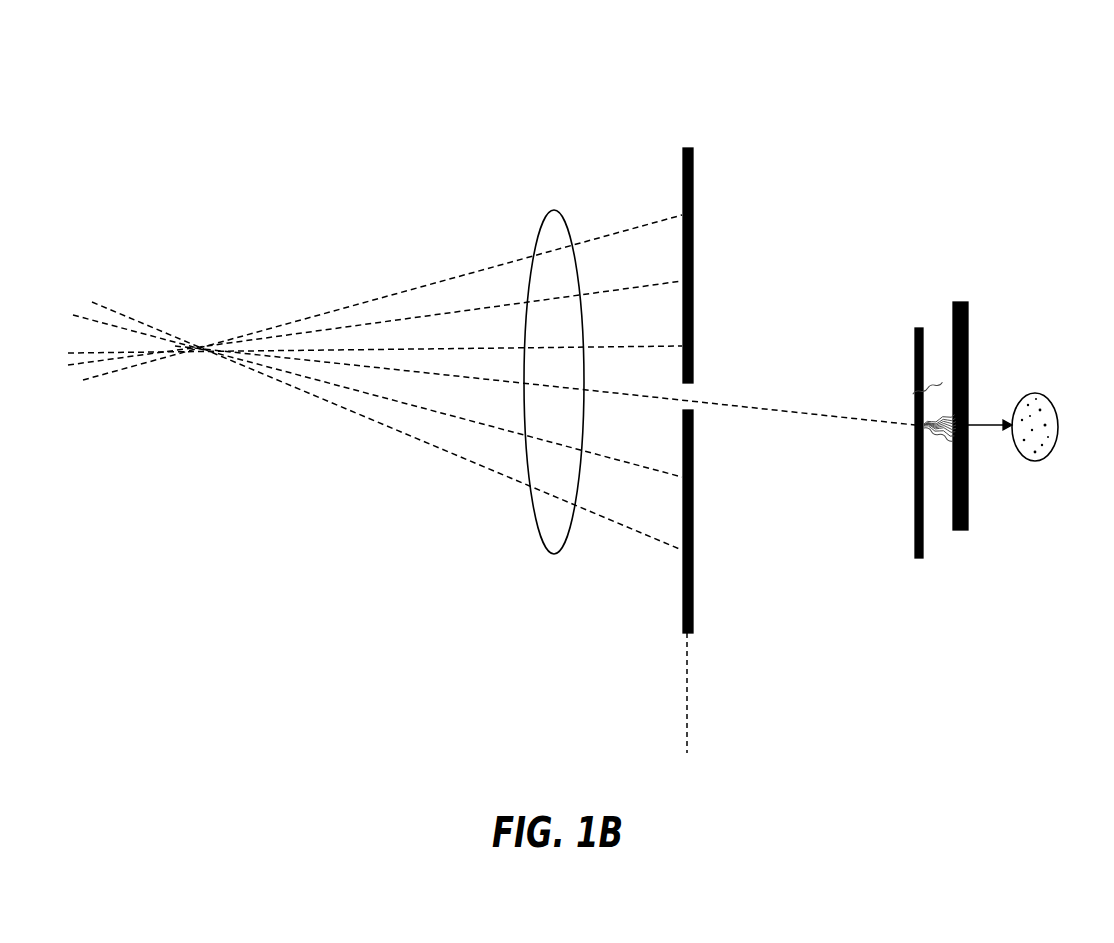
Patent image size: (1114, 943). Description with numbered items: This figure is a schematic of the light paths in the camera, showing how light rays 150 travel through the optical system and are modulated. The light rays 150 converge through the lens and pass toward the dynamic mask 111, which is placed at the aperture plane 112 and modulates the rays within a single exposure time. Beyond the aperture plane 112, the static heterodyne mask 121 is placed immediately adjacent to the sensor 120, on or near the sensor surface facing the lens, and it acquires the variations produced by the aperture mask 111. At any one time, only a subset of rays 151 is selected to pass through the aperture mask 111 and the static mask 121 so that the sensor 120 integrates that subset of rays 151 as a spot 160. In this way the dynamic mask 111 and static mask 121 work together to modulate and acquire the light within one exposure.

The dynamic mask 111 is at (683, 160).
The aperture plane 112 is at (687, 675).
The sensor 120 is at (963, 298).
The static heterodyne mask 121 is at (903, 322).
The light rays 150 is at (554, 554).
The subset of rays 151 is at (790, 412).
The spot 160 is at (1032, 392).